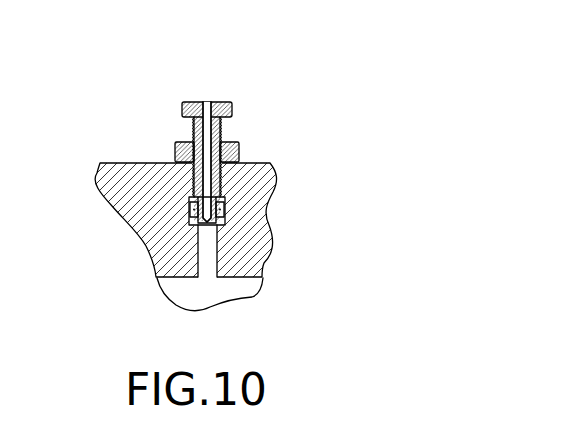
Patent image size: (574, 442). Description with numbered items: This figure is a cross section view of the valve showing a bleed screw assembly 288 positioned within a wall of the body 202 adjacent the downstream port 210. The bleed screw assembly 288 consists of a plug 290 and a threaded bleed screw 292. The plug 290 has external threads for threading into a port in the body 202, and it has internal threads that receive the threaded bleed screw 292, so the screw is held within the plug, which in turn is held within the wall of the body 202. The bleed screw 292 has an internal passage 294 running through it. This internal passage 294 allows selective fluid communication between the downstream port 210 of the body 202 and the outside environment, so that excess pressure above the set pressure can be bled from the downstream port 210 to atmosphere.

The body 202 is at (275, 166).
The downstream port 210 is at (178, 292).
The bleed screw assembly 288 is at (357, 100).
The plug 290 is at (177, 150).
The bleed screw 292 is at (233, 110).
The internal passage 294 is at (207, 105).